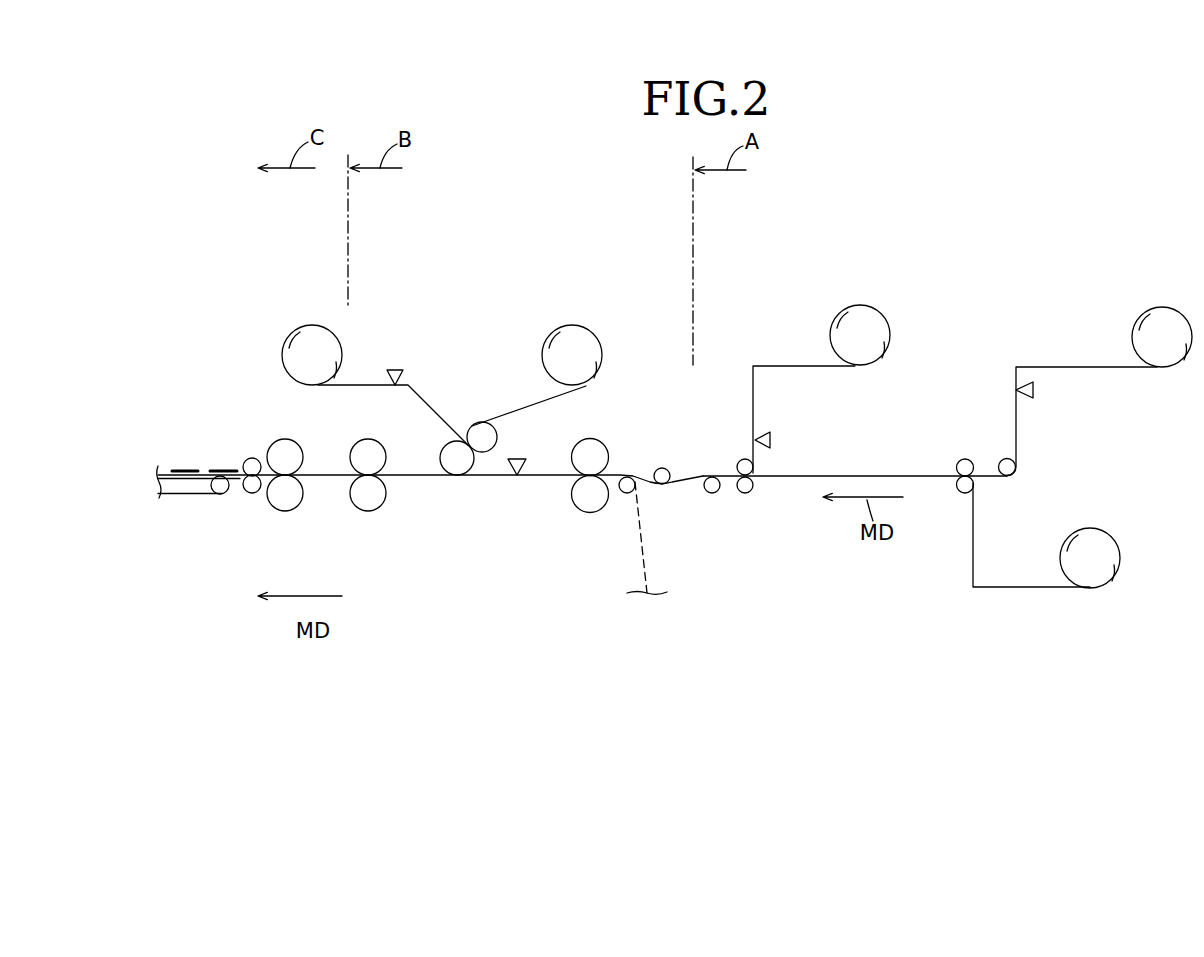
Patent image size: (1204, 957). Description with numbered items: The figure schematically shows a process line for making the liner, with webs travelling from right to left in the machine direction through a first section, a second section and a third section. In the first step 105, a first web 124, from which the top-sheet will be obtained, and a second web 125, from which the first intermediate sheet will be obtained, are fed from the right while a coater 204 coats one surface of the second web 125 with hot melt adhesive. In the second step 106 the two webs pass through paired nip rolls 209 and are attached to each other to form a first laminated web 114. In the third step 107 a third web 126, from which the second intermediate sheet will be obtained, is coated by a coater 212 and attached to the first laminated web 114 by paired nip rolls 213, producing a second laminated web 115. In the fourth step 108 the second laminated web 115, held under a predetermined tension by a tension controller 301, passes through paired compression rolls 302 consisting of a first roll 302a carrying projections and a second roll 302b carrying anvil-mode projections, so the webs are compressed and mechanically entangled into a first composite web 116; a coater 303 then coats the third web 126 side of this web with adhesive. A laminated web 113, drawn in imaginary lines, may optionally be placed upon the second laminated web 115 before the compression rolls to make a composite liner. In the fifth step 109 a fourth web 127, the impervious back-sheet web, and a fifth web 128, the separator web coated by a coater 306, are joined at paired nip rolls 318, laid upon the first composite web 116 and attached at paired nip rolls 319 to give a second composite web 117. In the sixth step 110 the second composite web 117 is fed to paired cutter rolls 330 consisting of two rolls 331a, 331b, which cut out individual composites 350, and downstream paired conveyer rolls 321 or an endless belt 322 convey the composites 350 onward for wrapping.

The first step 105 is at (991, 348).
The second step 106 is at (927, 428).
The third step 107 is at (731, 315).
The fourth step 108 is at (522, 491).
The fifth step 109 is at (462, 491).
The sixth step 110 is at (274, 525).
The laminated web 113 is at (642, 538).
The first laminated web 114 is at (880, 473).
The second laminated web 115 is at (698, 482).
The first composite web 116 is at (553, 478).
The second composite web 117 is at (318, 472).
The first web 124 is at (1013, 585).
The second web 125 is at (1058, 365).
The third web 126 is at (797, 364).
The fourth web 127 is at (523, 403).
The fifth web 128 is at (363, 383).
The coater 204 is at (1035, 389).
The paired nip rolls 209 is at (963, 458).
The coater 212 is at (770, 437).
The paired nip rolls 213 is at (751, 465).
The tension controller 301 is at (662, 468).
The paired compression rolls 302 is at (630, 439).
The first roll 302a is at (597, 487).
The second roll 302b is at (597, 451).
The coater 303 is at (521, 457).
The coater 306 is at (396, 368).
The paired nip rolls 318 is at (450, 452).
The paired nip rolls 319 is at (380, 493).
The paired conveyer rolls 321 is at (250, 488).
The endless belt 322 is at (170, 497).
The paired cutter rolls 330 is at (323, 486).
The roll 331a is at (296, 512).
The roll 331b is at (297, 463).
The individual composites 350 is at (222, 470).